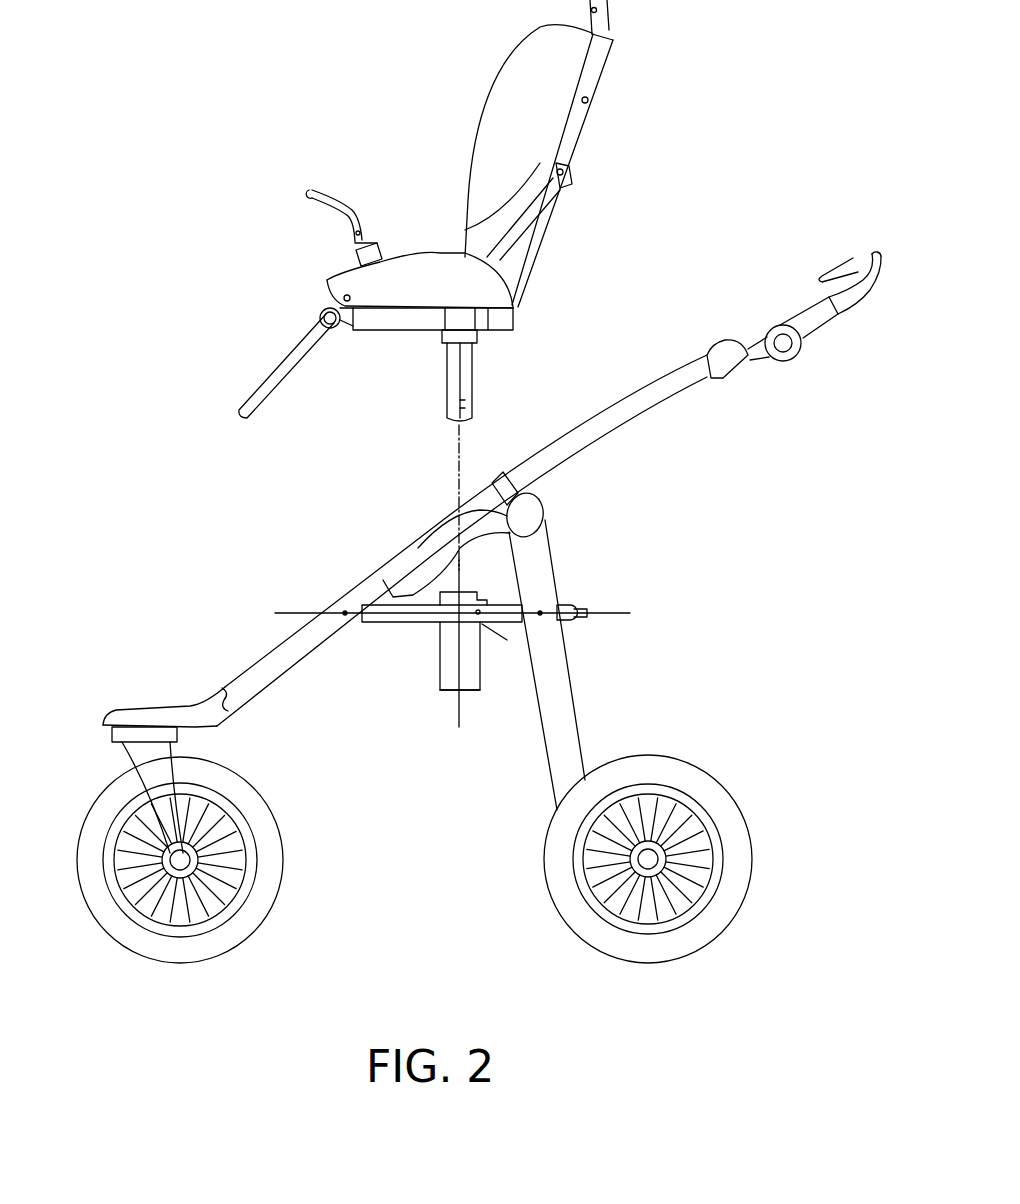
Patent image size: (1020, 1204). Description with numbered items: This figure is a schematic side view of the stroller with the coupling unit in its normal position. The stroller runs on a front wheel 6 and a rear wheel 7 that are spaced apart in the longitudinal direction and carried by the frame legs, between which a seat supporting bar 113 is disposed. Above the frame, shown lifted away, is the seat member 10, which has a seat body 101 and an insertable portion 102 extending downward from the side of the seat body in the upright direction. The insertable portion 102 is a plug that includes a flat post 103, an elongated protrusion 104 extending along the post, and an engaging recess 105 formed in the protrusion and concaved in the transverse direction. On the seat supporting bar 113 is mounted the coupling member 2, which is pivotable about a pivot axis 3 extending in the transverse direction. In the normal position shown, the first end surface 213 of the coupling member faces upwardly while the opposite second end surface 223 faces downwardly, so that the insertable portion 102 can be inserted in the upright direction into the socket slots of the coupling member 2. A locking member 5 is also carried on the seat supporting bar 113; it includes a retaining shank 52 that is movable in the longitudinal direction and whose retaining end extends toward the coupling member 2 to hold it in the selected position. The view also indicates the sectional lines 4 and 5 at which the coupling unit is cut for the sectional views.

The seat member 10 is at (604, 88).
The seat body 101 is at (547, 118).
The insertable portion 102 is at (478, 357).
The flat post 103 is at (468, 388).
The elongated protrusion 104 is at (446, 383).
The engaging recess 105 is at (462, 405).
The seat supporting bar 113 is at (398, 622).
The coupling member 2 is at (477, 663).
The first end surface 213 is at (467, 592).
The second end surface 223 is at (474, 692).
The pivot axis 3 is at (507, 640).
The retaining shank 52 is at (580, 618).
The section line 4- 4 is at (458, 572).
The locking member 5 is at (296, 608).
The front wheel 6 is at (272, 893).
The rear wheel 7 is at (692, 940).